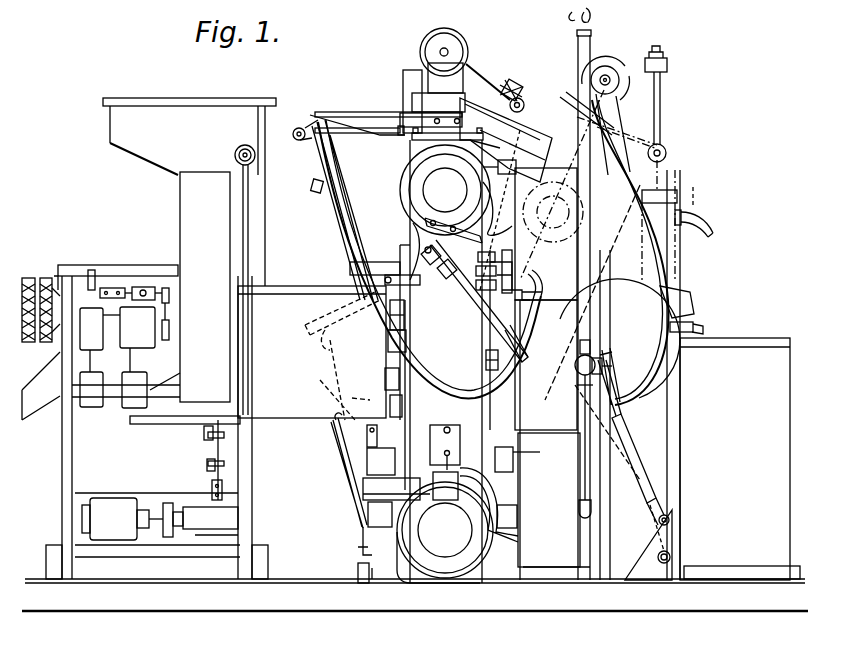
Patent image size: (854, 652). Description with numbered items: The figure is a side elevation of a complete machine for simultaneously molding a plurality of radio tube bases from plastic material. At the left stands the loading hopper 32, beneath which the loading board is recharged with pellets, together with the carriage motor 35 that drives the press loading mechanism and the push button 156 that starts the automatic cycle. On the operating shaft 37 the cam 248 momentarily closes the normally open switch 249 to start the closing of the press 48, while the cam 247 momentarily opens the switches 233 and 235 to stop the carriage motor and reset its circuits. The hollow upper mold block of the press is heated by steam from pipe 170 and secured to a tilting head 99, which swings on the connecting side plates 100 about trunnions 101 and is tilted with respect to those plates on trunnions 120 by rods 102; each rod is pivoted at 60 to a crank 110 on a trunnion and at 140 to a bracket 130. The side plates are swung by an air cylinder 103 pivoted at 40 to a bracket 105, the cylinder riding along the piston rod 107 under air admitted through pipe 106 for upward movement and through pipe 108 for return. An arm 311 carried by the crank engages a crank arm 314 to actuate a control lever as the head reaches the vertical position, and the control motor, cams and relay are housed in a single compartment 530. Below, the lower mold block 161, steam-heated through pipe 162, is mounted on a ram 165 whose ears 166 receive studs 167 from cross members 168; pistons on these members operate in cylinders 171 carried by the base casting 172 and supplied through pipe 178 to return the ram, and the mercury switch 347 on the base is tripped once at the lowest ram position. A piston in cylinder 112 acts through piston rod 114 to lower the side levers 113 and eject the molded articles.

The loading hopper 32 is at (112, 132).
The push button 156 is at (143, 287).
The carriage motor 35 is at (100, 518).
The switch 233 is at (205, 435).
The cam 247 is at (208, 438).
The switch 235 is at (204, 442).
The normally open switch 249 is at (210, 468).
The operating shaft 37 is at (222, 452).
The cam 248 is at (224, 463).
The press 48 is at (388, 104).
The pivot 40 is at (495, 88).
The bracket 105 is at (478, 100).
The air cylinder 103 is at (556, 110).
The trunnions 120 is at (428, 180).
The tilting head 99 is at (398, 196).
The arm 311 is at (445, 192).
The compartment 530 is at (515, 172).
The crank arm 314 is at (549, 234).
The pipe 106 is at (642, 178).
The extension or crank 110 is at (420, 232).
The side levers 113 is at (386, 275).
The pipe 170 is at (478, 272).
The pivot 60 is at (438, 277).
The rods 102 is at (470, 296).
The connecting side plates 100 is at (460, 370).
The lower mold block 161 is at (390, 318).
The ram 165 is at (388, 340).
The piston rod 114 is at (340, 368).
The ears 166 is at (388, 404).
The pipe 162 is at (518, 292).
The pipe 108 is at (694, 303).
The studs 167 is at (367, 432).
The supply pipe 178 is at (352, 447).
The cylinder 112 is at (367, 465).
The cylinders 171 is at (355, 483).
The cross members 168 is at (368, 514).
The mercury switch 347 is at (358, 574).
The trunnions 101 is at (452, 548).
The base casting 172 is at (410, 572).
The piston rod 107 is at (640, 448).
The pivot 140 is at (670, 518).
The bracket 130 is at (672, 562).